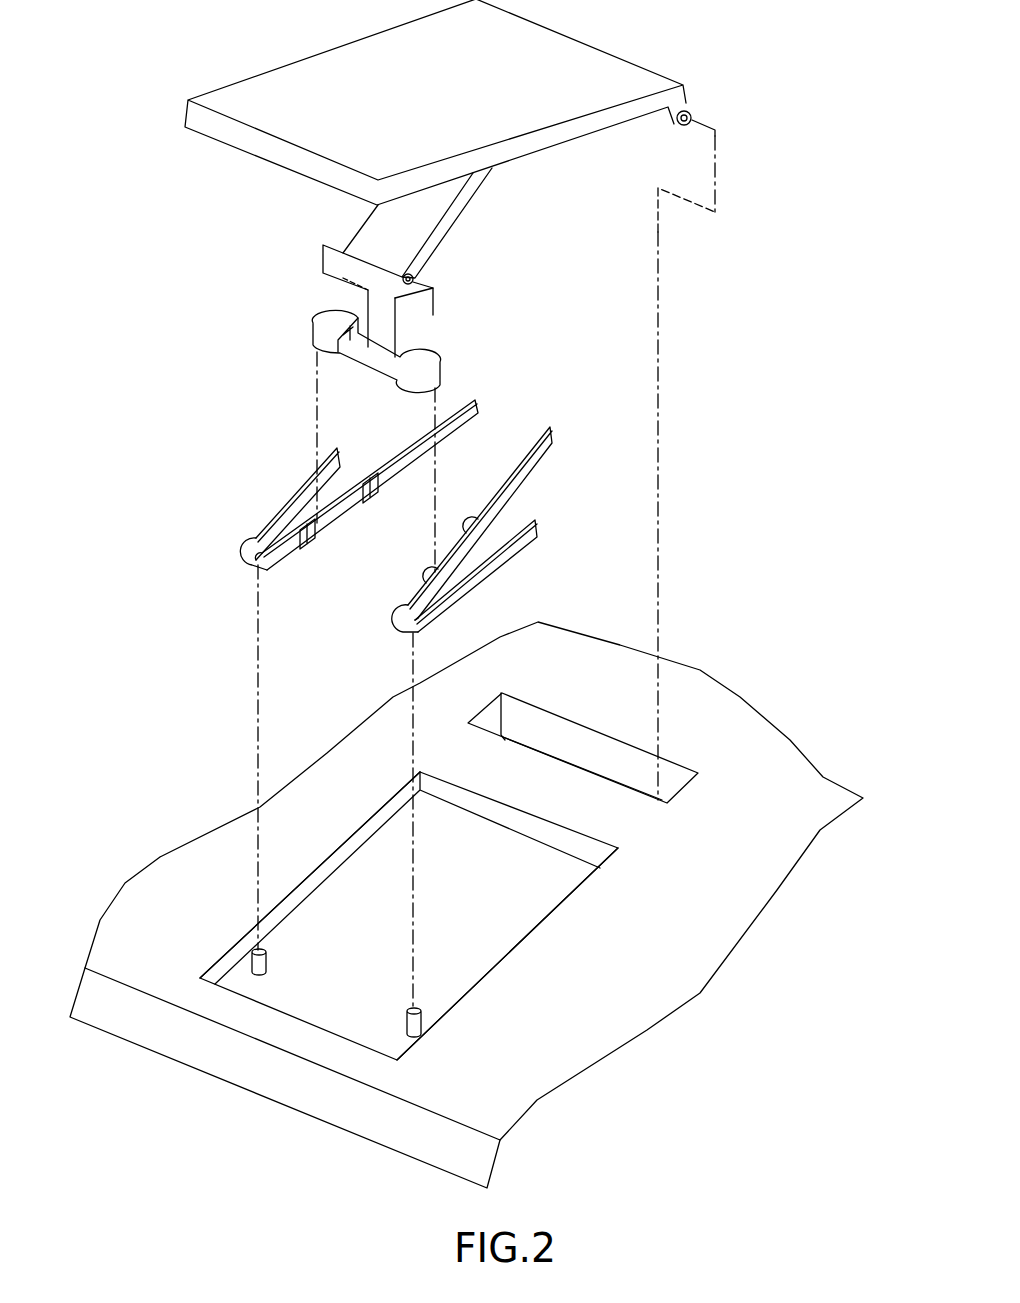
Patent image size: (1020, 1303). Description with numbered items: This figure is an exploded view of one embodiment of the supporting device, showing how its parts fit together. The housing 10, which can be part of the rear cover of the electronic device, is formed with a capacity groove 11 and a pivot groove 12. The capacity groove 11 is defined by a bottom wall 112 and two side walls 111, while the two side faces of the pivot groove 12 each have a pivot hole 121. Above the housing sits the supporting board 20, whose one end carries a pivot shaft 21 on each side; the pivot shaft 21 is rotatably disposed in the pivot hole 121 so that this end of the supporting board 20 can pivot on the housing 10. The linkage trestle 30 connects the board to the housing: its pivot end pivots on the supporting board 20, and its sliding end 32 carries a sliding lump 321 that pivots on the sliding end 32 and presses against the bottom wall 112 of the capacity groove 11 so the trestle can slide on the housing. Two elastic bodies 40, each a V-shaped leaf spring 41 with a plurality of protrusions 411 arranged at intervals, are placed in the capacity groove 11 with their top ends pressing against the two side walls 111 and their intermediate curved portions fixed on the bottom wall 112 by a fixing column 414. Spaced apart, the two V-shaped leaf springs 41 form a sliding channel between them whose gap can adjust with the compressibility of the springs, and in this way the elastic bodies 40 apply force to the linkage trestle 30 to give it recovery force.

The housing 10 is at (466, 905).
The capacity groove 11 is at (409, 883).
The side walls 111 is at (310, 823).
The bottom wall 112 is at (507, 973).
The pivot groove 12 is at (583, 697).
The pivot holes 121 is at (514, 693).
The supporting board 20 is at (400, 102).
The pivot shaft 21 is at (730, 149).
The linkage trestle 30 is at (444, 226).
The sliding end 32 is at (414, 301).
The sliding lump 321 is at (333, 326).
The elastic body 40 is at (418, 488).
The V-shaped leaf spring 41 is at (421, 516).
The protrusions 411 is at (339, 558).
The fixing column 414 is at (336, 993).